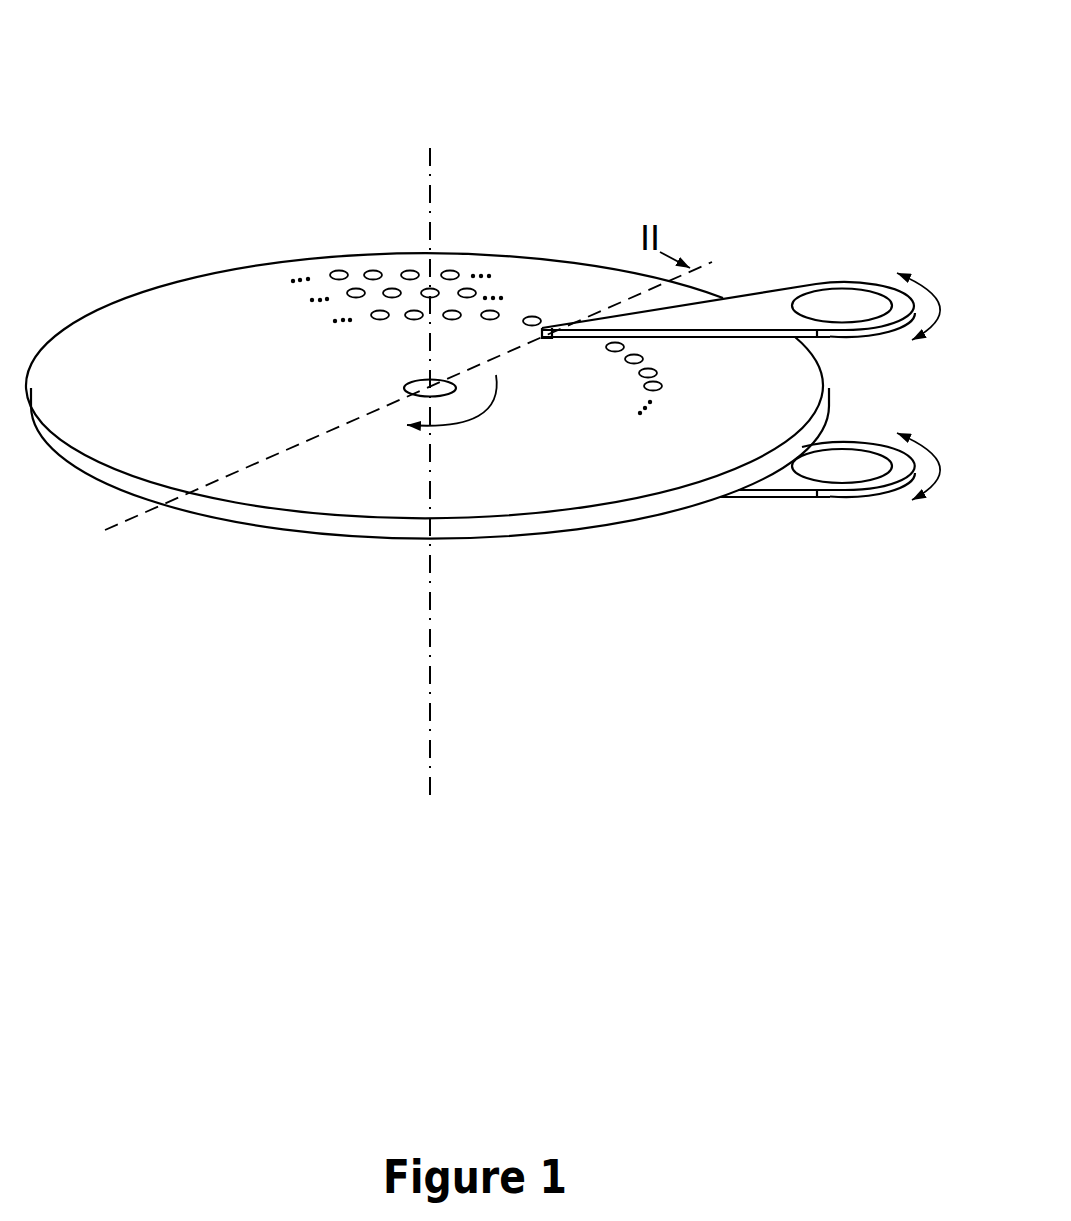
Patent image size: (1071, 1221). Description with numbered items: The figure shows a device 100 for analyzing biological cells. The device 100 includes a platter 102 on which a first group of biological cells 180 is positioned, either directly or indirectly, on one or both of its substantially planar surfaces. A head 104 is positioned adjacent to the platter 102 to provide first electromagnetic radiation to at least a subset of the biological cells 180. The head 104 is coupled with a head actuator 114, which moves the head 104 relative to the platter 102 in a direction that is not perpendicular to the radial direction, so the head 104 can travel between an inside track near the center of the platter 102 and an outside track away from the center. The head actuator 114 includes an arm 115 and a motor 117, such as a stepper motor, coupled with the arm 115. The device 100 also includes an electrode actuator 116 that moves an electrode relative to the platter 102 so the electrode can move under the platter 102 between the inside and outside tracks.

The device 100 is at (328, 122).
The platter 102 is at (237, 297).
The head 104 is at (552, 327).
The head actuator 114 is at (865, 284).
The arm 115 is at (750, 312).
The electrode actuator 116 is at (847, 500).
The motor 117 is at (822, 298).
The biological cells 180 is at (375, 272).